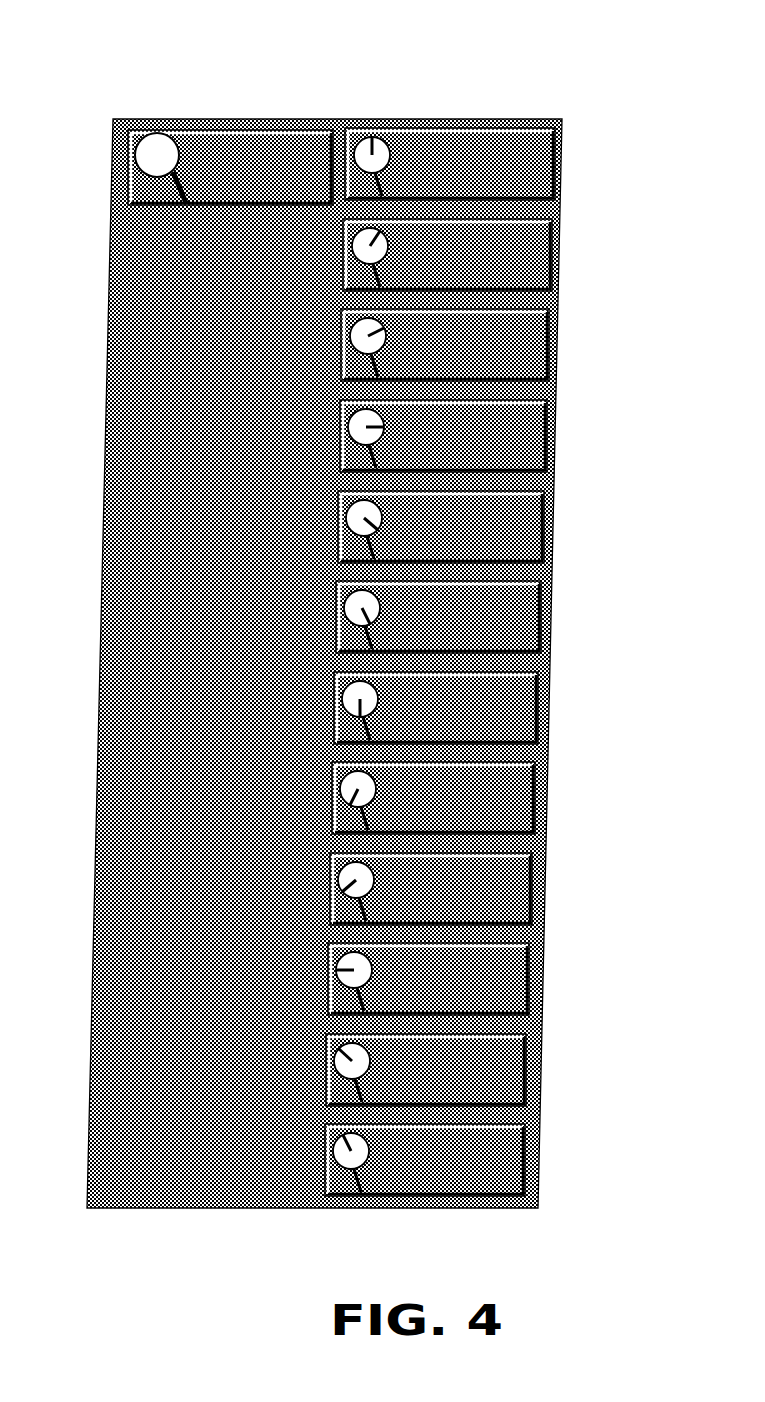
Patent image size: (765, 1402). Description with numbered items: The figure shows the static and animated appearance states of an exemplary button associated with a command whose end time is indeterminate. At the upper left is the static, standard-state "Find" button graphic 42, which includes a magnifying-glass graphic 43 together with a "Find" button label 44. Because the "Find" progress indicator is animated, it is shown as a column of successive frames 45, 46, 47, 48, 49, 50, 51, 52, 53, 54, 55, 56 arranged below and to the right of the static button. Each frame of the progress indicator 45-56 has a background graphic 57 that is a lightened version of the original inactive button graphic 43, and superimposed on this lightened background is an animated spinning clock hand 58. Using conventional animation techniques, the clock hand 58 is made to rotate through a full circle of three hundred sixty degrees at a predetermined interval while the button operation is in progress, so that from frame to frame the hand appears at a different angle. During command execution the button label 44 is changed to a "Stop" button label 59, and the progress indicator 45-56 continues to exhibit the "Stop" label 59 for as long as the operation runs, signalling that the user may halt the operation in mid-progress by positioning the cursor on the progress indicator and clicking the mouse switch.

The "Find" button graphic 42 is at (210, 128).
The graphic 43 is at (150, 190).
The "Find" button label 44 is at (225, 163).
The frame of "Find" progress indicator 45 is at (494, 100).
The frame of "Find" progress indicator 46 is at (552, 267).
The frame of "Find" progress indicator 47 is at (549, 356).
The frame of "Find" progress indicator 48 is at (547, 443).
The frame of "Find" progress indicator 49 is at (544, 535).
The frame of "Find" progress indicator 50 is at (541, 623).
The frame of "Find" progress indicator 51 is at (538, 712).
The frame of "Find" progress indicator 52 is at (535, 800).
The frame of "Find" progress indicator 53 is at (532, 893).
The frame of "Find" progress indicator 54 is at (529, 982).
The frame of "Find" progress indicator 55 is at (526, 1072).
The frame of "Find" progress indicator 56 is at (525, 1162).
The background graphic 57 is at (408, 170).
The animated spinning clock hand 58 is at (403, 122).
The "Stop" button label 59 is at (505, 165).